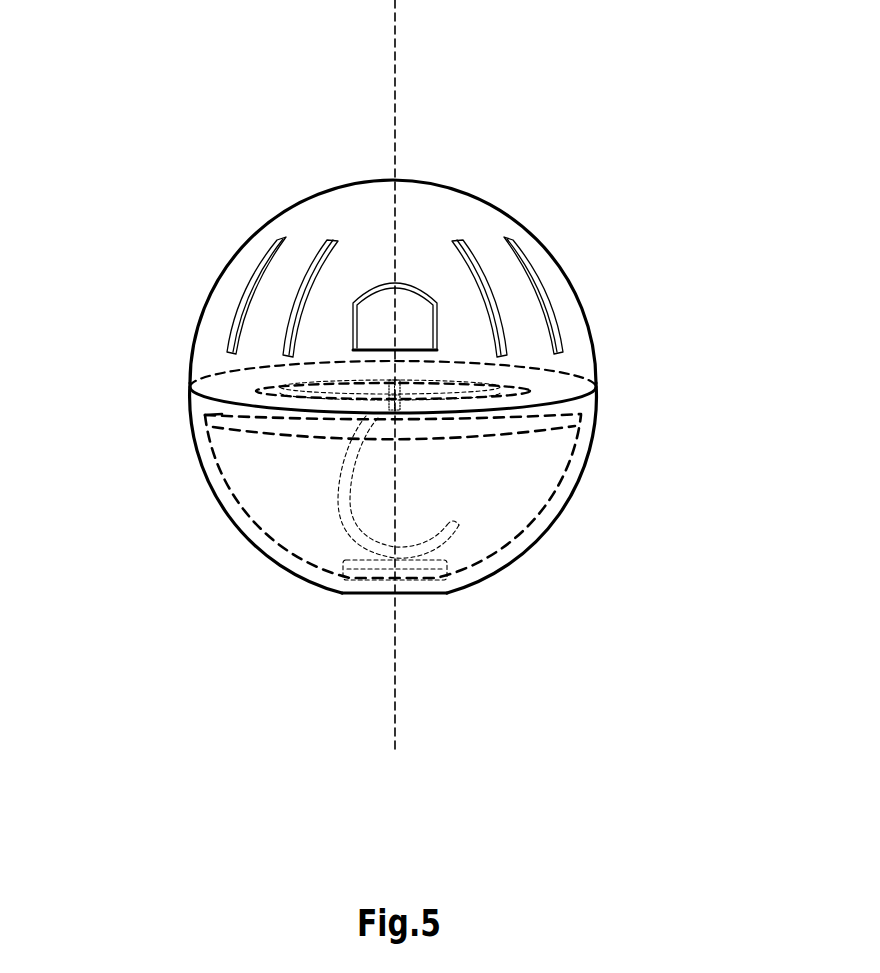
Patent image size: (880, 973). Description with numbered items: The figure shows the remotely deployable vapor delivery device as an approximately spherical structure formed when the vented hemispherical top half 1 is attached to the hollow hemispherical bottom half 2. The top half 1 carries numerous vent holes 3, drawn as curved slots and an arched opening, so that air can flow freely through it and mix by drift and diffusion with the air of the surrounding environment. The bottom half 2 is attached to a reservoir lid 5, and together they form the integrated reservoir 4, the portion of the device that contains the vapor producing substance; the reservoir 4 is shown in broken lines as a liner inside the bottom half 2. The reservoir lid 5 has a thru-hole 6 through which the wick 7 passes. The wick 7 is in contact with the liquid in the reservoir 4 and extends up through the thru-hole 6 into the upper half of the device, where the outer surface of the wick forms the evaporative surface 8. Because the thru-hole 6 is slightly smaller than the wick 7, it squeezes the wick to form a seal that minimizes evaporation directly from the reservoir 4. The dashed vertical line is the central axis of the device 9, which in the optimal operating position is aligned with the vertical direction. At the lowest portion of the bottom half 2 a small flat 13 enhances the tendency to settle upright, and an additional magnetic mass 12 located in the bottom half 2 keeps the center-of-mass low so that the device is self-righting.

The vented hemispherical top half 1 is at (233, 275).
The hemispherical bottom half 2 is at (207, 472).
The vent holes 3 is at (243, 312).
The integrated reservoir 4 is at (280, 547).
The reservoir lid 5 is at (523, 395).
The thru-hole 6 is at (400, 402).
The wick 7 is at (348, 485).
The evaporative surface 8 is at (458, 378).
The central axis of the device 9 is at (395, 680).
The additional magnetic mass 12 is at (423, 572).
The small flat 13 is at (410, 597).